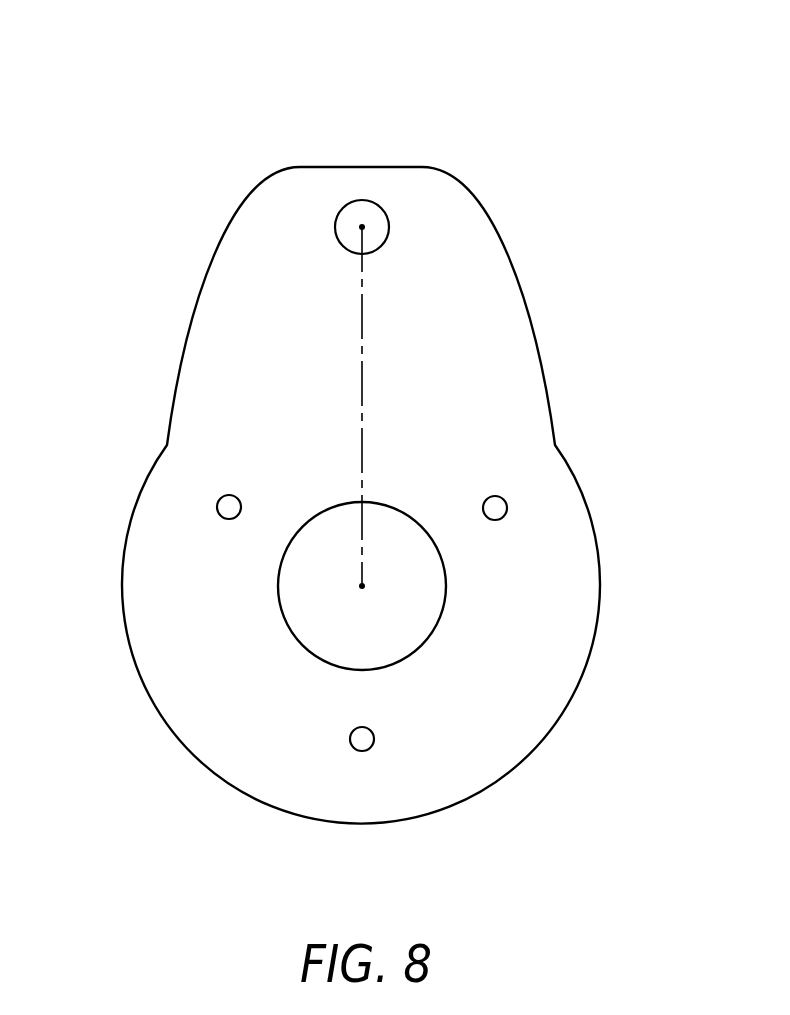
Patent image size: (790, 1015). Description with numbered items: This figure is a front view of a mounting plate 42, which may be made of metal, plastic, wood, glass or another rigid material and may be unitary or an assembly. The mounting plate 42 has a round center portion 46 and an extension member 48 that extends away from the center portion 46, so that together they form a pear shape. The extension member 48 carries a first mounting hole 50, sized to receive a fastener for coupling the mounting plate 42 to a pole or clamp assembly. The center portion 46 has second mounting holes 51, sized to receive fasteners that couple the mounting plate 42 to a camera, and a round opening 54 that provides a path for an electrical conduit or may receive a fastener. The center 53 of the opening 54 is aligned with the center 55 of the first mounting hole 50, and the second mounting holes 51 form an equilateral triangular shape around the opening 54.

The mounting plate 42 is at (572, 122).
The center portion 46 is at (535, 618).
The extension member 48 is at (473, 277).
The first mounting hole 50 is at (347, 247).
The second mounting hole 51 is at (229, 507).
The center of the opening 53 is at (362, 586).
The opening 54 is at (320, 633).
The center of the first mounting hole 55 is at (362, 227).